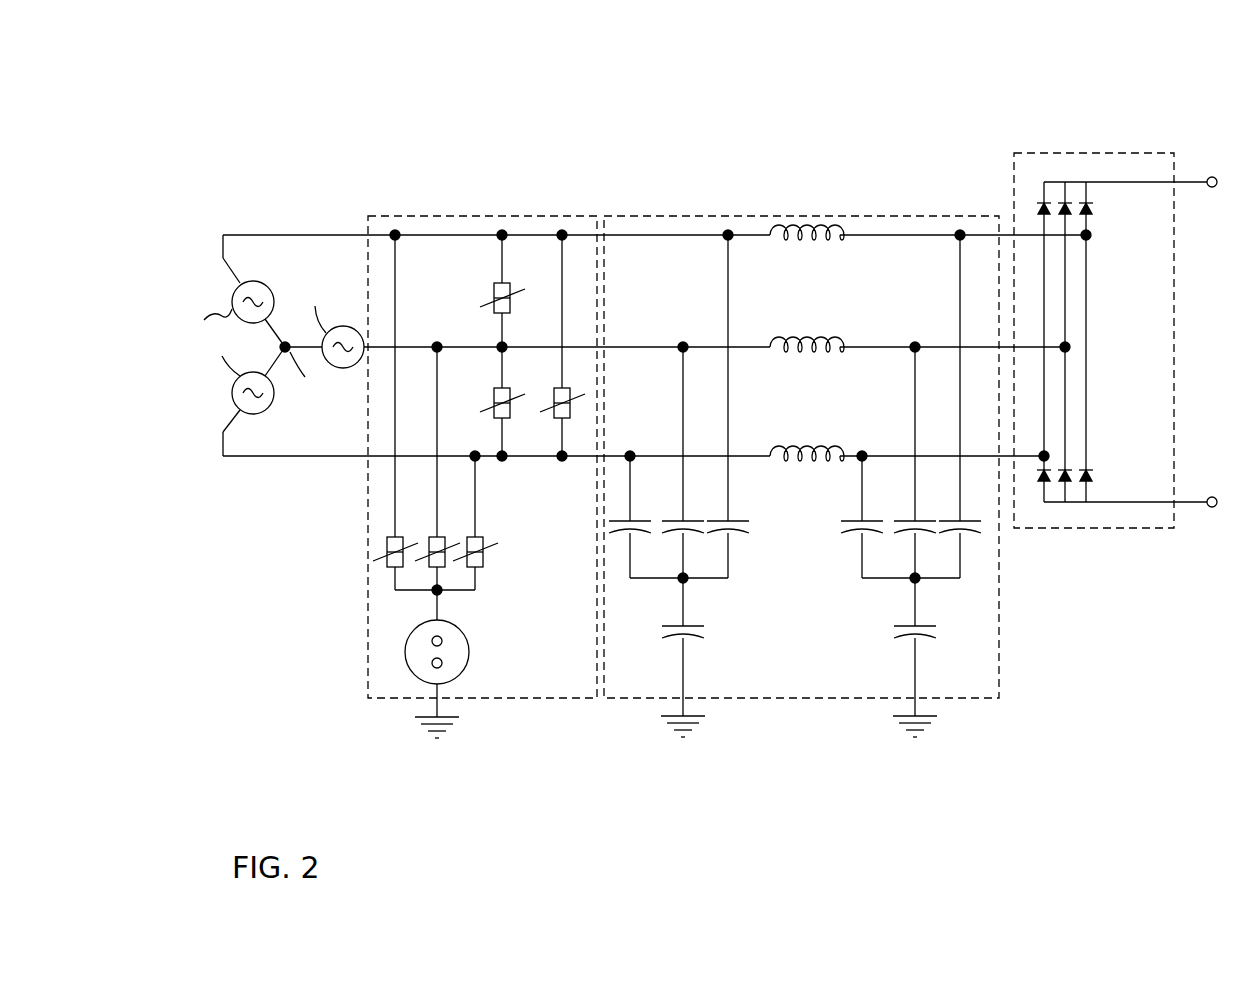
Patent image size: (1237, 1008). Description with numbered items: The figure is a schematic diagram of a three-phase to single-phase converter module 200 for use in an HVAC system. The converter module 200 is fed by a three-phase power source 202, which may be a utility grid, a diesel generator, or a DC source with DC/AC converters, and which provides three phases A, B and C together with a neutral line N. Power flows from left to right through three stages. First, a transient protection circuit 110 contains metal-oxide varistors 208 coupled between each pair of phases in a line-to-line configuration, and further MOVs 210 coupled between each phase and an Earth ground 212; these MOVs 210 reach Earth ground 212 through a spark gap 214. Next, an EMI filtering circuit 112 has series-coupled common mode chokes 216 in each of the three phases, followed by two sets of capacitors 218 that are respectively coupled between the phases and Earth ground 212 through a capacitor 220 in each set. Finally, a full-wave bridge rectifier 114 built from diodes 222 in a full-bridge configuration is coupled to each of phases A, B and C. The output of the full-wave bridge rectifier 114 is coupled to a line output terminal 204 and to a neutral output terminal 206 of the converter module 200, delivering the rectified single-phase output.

The converter module 200 is at (372, 147).
The three-phase power source 202 is at (266, 250).
The transient protection circuit 110 is at (546, 214).
The EMI filtering circuit 112 is at (797, 214).
The full-wave bridge rectifier 114 is at (1035, 153).
The line output terminal 204 is at (1212, 188).
The neutral output terminal 206 is at (1212, 497).
The metal-oxide varistors 208 is at (494, 296).
The MOVs 210 is at (484, 559).
The Earth ground 212 is at (446, 738).
The spark gap 214 is at (465, 676).
The common mode chokes 216 is at (770, 234).
The capacitors 218 is at (636, 524).
The capacitor 220 is at (705, 636).
The diodes 222 is at (1040, 206).